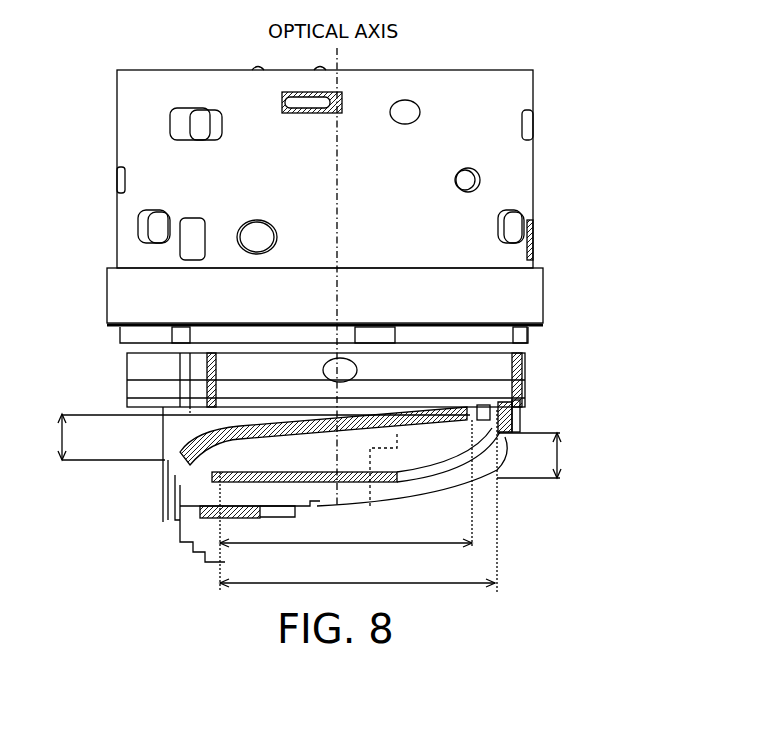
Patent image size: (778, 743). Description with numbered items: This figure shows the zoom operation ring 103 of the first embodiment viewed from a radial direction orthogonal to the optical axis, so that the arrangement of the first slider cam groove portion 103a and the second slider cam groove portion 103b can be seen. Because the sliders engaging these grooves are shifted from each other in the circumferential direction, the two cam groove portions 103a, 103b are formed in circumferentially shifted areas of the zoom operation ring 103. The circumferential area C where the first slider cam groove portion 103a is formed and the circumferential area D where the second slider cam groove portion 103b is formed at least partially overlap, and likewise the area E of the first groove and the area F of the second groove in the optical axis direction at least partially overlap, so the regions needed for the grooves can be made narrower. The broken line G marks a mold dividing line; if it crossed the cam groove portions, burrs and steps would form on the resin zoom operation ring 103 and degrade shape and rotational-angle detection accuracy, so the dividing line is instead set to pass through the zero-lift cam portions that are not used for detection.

The zoom operation ring 103 is at (498, 292).
The first slider cam groove portion 103a is at (212, 445).
The second slider cam groove portion 103b is at (217, 462).
The area of the first slider cam groove portion in the optical axis direction E is at (98, 437).
The area of the second slider cam groove portion in the optical axis direction F is at (539, 455).
The area of the first slider cam groove portion in the circumferential direction C is at (346, 506).
The area of the second slider cam groove portion in the circumferential direction D is at (358, 501).
The mold dividing line G is at (400, 435).